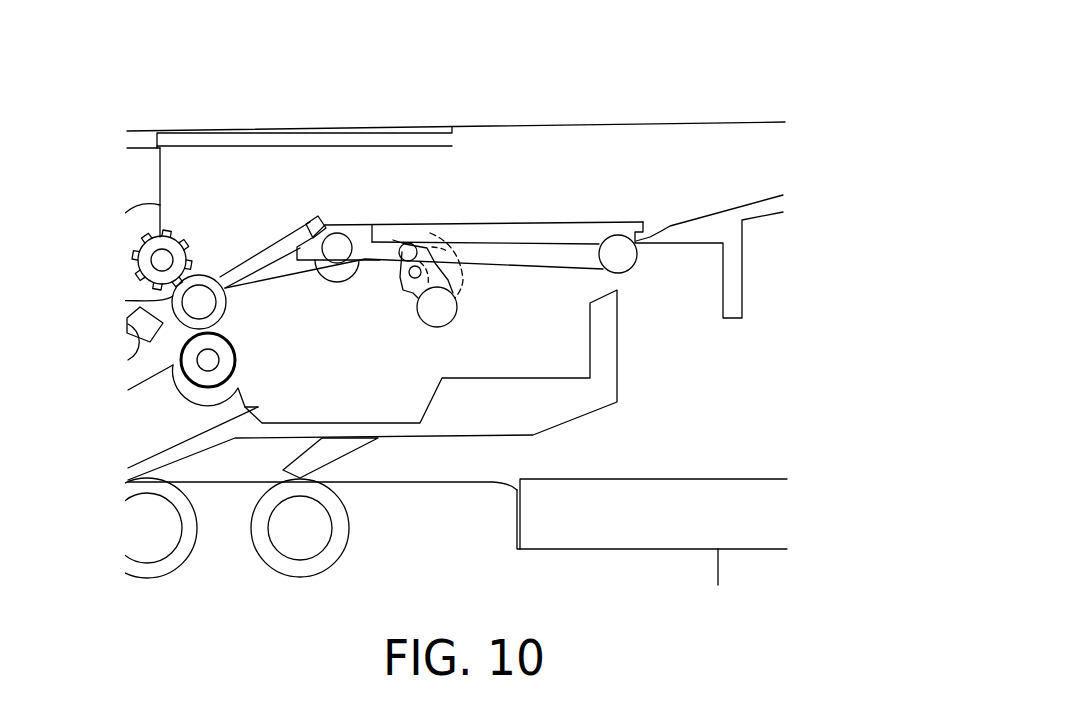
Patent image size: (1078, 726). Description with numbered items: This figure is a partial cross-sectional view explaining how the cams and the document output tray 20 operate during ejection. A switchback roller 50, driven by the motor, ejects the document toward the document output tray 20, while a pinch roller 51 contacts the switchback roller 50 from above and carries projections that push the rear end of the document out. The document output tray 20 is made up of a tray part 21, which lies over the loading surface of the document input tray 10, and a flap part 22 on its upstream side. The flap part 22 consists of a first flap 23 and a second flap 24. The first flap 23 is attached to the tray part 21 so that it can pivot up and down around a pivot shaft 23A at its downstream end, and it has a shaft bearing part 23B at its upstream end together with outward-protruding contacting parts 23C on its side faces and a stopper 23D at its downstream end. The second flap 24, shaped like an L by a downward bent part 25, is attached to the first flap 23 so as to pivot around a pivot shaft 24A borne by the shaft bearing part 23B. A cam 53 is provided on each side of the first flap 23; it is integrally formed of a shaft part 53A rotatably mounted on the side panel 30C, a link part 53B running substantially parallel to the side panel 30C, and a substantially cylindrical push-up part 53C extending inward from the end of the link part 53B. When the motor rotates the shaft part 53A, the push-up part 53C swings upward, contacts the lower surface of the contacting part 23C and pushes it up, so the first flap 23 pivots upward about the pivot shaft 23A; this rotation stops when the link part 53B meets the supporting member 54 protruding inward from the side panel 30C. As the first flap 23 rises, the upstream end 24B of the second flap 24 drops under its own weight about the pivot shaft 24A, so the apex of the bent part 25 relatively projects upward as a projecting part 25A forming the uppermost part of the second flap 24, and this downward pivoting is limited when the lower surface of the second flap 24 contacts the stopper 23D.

The document input tray 10 is at (717, 474).
The document output tray 20 is at (642, 178).
The tray part 21 is at (722, 198).
The flap part 22 is at (333, 186).
The first flap 23 is at (560, 212).
The pivot shaft 23A is at (627, 267).
The shaft bearing part 23B is at (358, 260).
The contacting part 23C is at (522, 222).
The stopper 23D is at (298, 262).
The second flap 24 is at (269, 283).
The pivot shaft 24A is at (337, 248).
The upstream end 24B is at (207, 274).
The bent part 25 is at (295, 221).
The projecting part 25A is at (311, 210).
The side panel 30C is at (698, 122).
The switchback roller 50 is at (116, 323).
The pinch roller 51 is at (183, 239).
The cam 53 is at (474, 295).
The shaft part 53A is at (448, 318).
The link part 53B is at (438, 247).
The push-up part 53C is at (440, 228).
The supporting member 54 is at (412, 278).